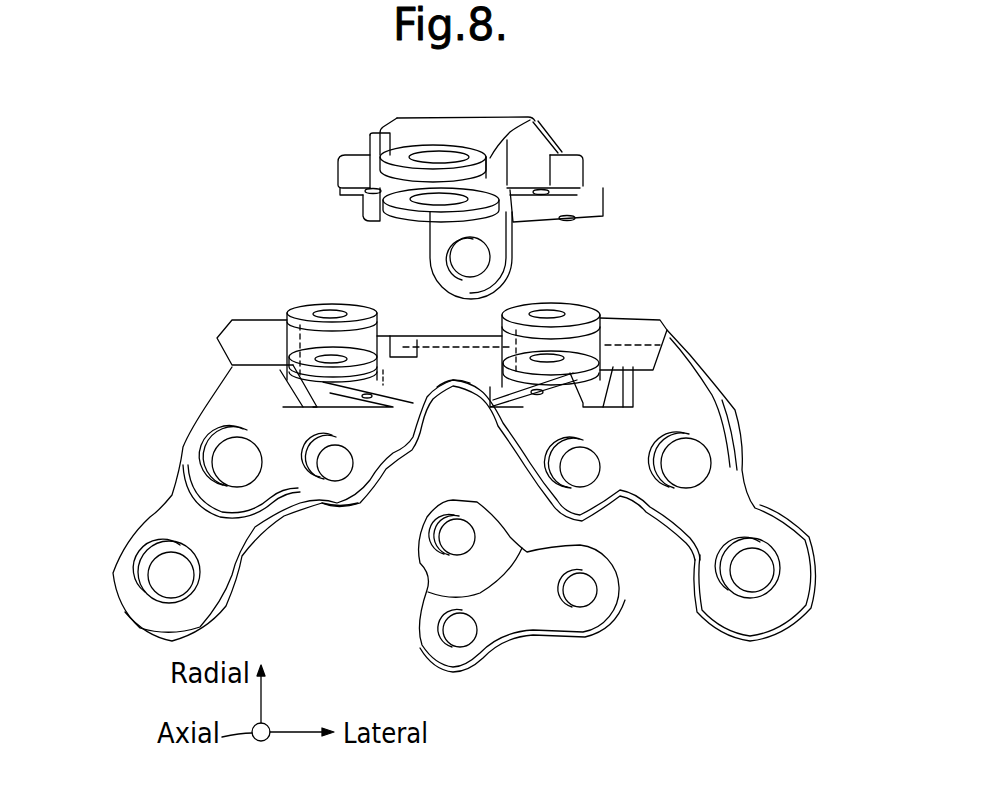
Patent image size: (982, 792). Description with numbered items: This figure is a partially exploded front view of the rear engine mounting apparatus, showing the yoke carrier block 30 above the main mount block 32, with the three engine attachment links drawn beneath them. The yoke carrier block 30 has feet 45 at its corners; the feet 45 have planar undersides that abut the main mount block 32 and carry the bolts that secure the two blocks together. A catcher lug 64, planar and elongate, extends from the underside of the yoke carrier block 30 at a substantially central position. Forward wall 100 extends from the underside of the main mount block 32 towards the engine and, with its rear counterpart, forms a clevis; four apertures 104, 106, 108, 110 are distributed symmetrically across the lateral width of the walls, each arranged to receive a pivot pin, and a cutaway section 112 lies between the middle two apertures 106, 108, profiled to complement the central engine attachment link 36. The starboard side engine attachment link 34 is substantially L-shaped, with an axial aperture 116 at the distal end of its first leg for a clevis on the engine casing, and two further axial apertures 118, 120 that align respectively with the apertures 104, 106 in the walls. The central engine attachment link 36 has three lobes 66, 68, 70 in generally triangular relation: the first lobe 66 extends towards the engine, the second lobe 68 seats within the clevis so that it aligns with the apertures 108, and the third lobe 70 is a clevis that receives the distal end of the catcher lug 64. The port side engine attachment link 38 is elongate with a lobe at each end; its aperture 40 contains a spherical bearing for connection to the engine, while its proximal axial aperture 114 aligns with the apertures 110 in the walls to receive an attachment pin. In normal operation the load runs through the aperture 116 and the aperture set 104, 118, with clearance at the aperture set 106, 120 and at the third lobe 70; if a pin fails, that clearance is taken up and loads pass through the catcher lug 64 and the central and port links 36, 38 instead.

The yoke carrier block 30 is at (322, 117).
The main mount block 32 is at (232, 311).
The starboard side engine attachment link 34 is at (177, 515).
The central engine attachment link 36 is at (543, 612).
The port side engine attachment link 38 is at (743, 538).
The aperture 40 is at (763, 583).
The feet 45 is at (597, 190).
The catcher lug 64 is at (497, 236).
The first lobe 66 is at (433, 643).
The second lobe 68 is at (605, 608).
The third lobe 70 is at (433, 570).
The forward wall 100 is at (272, 405).
The aperture 104 is at (230, 460).
The aperture 106 is at (333, 464).
The aperture 108 is at (568, 476).
The aperture 110 is at (690, 470).
The cutaway section 112 is at (470, 400).
The axial aperture 114 is at (690, 458).
The axial aperture 116 is at (162, 587).
The axial aperture 118 is at (257, 490).
The axial aperture 120 is at (337, 473).